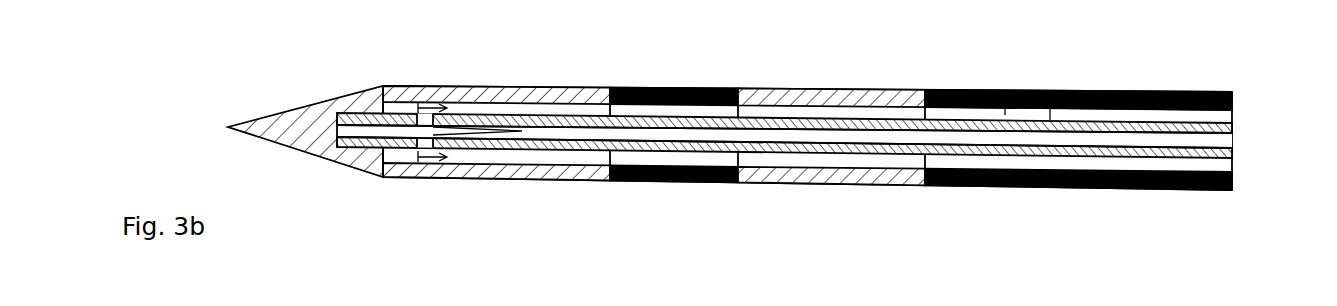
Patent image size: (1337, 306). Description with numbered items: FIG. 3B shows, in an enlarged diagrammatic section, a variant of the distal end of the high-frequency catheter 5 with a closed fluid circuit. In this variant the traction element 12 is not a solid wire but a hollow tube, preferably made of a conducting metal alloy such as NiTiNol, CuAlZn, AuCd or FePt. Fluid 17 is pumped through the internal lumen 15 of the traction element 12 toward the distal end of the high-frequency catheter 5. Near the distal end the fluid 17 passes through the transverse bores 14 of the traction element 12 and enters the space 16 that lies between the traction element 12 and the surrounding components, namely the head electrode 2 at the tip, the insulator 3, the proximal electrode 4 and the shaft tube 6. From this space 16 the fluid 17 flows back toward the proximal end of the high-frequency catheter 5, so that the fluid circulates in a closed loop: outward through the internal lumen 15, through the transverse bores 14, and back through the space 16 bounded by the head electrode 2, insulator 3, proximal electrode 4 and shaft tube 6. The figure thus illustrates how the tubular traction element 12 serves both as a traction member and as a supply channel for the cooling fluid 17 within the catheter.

The head electrode 2 is at (310, 101).
The insulator 3 is at (678, 87).
The proximal electrode 4 is at (863, 88).
The high-frequency catheter 5 is at (1226, 71).
The shaft tube 6 is at (1172, 93).
The traction element 12 is at (1066, 93).
The transverse bores 14 is at (408, 86).
The internal lumen 15 is at (788, 133).
The space 16 is at (1000, 93).
The fluid 17 is at (478, 135).